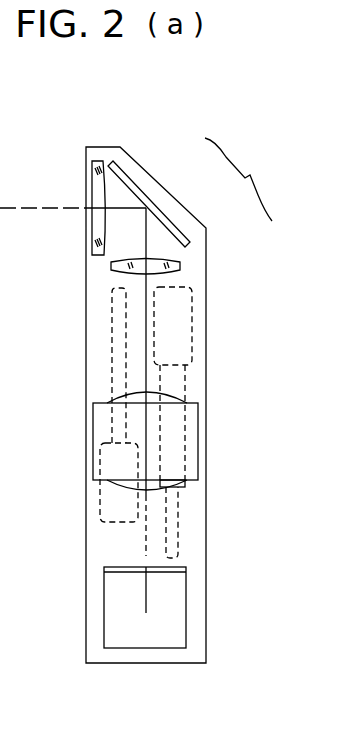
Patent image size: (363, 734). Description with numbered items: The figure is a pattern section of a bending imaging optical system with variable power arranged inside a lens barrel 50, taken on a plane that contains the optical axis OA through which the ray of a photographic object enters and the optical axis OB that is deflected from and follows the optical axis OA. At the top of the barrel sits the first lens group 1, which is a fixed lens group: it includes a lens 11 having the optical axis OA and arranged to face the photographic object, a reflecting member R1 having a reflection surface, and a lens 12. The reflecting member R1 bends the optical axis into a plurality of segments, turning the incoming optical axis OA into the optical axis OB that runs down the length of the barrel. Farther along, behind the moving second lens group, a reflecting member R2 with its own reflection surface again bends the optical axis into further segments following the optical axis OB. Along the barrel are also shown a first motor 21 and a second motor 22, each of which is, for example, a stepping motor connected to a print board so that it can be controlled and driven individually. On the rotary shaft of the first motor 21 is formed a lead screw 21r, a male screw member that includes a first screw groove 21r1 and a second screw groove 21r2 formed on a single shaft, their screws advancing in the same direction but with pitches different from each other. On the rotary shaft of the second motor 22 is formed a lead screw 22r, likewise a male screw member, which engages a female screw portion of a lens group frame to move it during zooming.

The lens barrel 50 is at (179, 141).
The first lens group 1 is at (264, 166).
The optical axis OA is at (33, 211).
The lens 11 is at (97, 193).
The reflecting member R1 is at (144, 198).
The lens 12 is at (182, 266).
The optical axis OB is at (147, 290).
The first motor 21 is at (178, 340).
The lead screw 22r is at (118, 342).
The first screw groove 21r1 is at (177, 385).
The second screw groove 21r2 is at (175, 505).
The lead screw 21r is at (282, 390).
The second motor 22 is at (110, 502).
The reflecting member R2 is at (163, 640).